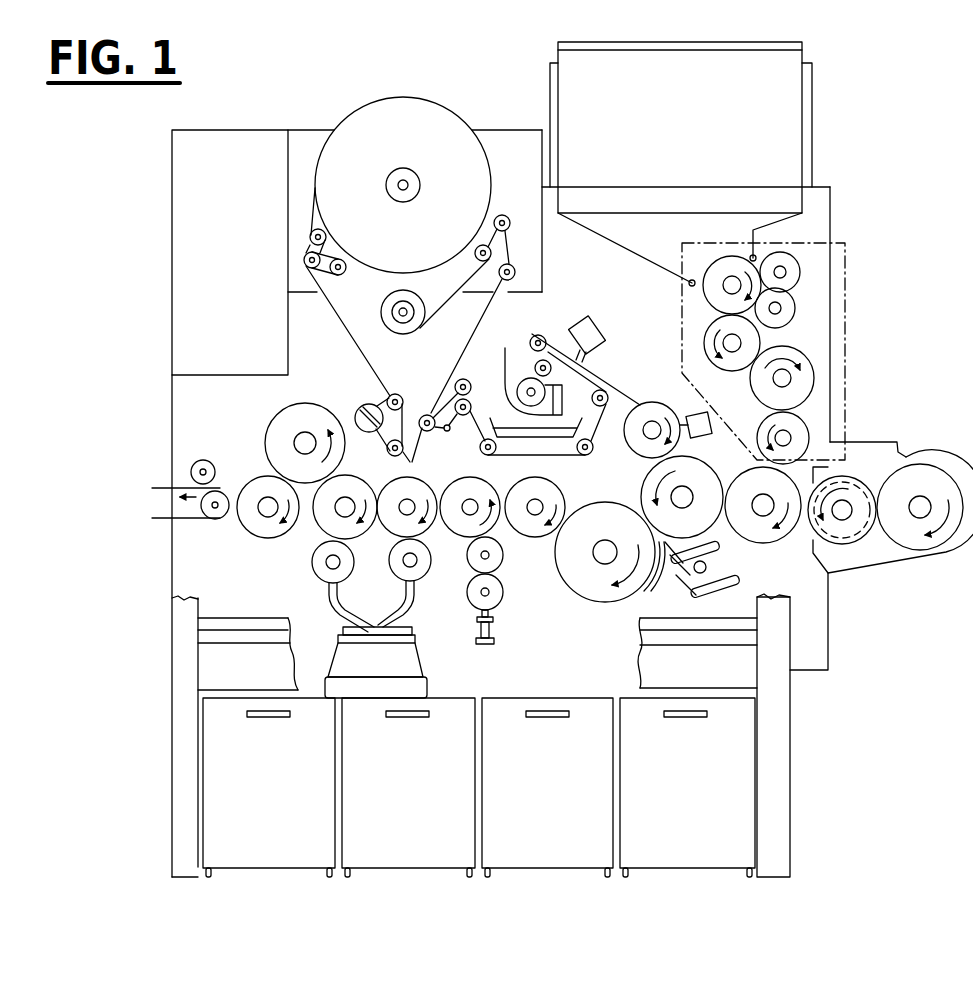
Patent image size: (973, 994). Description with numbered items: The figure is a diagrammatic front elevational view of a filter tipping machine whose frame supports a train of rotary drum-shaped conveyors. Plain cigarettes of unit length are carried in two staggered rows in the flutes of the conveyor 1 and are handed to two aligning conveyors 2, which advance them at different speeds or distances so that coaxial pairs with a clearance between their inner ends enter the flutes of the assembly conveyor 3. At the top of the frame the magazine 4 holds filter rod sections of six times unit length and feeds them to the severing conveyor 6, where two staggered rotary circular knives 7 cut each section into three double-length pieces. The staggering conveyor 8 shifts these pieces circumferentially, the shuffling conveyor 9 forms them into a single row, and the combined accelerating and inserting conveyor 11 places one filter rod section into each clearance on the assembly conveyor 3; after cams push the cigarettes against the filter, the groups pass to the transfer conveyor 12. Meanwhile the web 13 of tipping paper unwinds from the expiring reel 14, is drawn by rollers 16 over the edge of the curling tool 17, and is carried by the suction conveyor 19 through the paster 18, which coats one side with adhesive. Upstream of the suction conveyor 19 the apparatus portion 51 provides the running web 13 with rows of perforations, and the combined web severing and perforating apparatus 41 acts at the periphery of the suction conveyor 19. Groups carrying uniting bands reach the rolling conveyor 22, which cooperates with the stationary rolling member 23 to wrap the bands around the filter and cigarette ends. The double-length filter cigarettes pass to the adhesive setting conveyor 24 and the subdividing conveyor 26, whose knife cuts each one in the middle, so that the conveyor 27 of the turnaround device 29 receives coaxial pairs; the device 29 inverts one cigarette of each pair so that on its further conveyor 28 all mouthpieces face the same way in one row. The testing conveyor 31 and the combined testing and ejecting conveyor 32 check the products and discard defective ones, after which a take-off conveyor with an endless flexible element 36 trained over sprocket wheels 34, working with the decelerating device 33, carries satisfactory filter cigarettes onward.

The rotary drum-shaped conveyor 1 is at (933, 480).
The aligning conveyors 2 is at (858, 495).
The assembly conveyor 3 is at (783, 540).
The magazine 4 is at (797, 99).
The severing conveyor 6 is at (716, 267).
The rotary circular knives 7 is at (795, 308).
The staggering conveyor 8 is at (707, 333).
The shuffling conveyor 9 is at (800, 365).
The combined accelerating and inserting conveyor 11 is at (800, 427).
The transfer conveyor 12 is at (640, 488).
The web 13 is at (518, 278).
The expiring reel 14 is at (408, 333).
The rollers 16 is at (462, 418).
The curling tool 17 is at (444, 430).
The paster 18 is at (523, 364).
The suction conveyor 19 is at (633, 412).
The rolling or wrapping conveyor 22 is at (588, 597).
The rolling member 23 is at (667, 598).
The adhesive drying or setting conveyor 24 is at (532, 535).
The subdividing conveyor 26 is at (500, 533).
The conveyor of turnaround device 27 is at (432, 532).
The further conveyor of turnaround device 28 is at (352, 538).
The turnaround device 29 is at (322, 601).
The testing conveyor 31 is at (310, 412).
The combined testing and ejecting conveyor 32 is at (258, 480).
The decelerating device 33 is at (200, 460).
The sprocket wheel 34 is at (218, 520).
The endless flexible element 36 is at (165, 487).
The combined web severing and perforating apparatus 41 is at (692, 413).
The second apparatus portion 51 is at (588, 322).